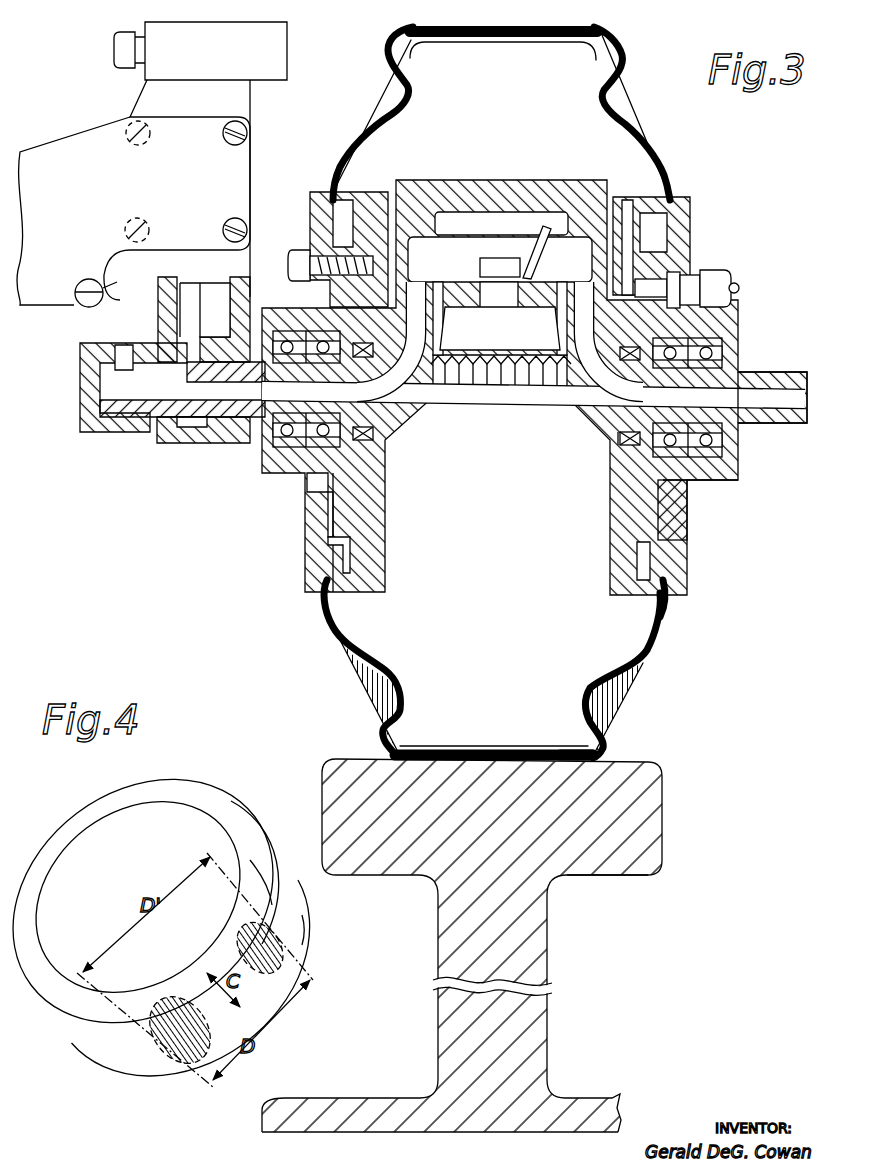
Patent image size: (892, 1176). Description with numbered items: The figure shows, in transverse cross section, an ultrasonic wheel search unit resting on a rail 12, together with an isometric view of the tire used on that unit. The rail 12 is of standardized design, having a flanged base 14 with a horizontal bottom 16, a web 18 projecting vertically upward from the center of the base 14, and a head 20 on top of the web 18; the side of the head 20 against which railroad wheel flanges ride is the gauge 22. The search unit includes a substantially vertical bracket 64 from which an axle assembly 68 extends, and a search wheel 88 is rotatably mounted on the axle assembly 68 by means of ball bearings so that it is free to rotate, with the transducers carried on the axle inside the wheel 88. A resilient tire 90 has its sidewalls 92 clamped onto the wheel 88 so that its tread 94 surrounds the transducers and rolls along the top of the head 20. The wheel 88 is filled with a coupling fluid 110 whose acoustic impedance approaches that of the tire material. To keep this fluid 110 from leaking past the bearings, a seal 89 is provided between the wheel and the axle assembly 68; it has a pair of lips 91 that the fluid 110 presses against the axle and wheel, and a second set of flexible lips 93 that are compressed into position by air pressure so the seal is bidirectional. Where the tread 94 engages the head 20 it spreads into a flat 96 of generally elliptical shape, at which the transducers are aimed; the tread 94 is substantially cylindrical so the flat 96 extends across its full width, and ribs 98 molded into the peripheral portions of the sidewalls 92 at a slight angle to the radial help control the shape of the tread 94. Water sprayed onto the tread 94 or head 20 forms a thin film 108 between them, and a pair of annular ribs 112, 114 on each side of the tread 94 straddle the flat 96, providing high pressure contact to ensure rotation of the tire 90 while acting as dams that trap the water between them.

In FIG. 3, the rail 12 is at (485, 955).
In FIG. 3, the flanged base 14 is at (378, 1101).
In FIG. 3, the horizontal bottom 16 is at (430, 1132).
In FIG. 3, the web 18 is at (527, 1030).
In FIG. 3, the head 20 is at (574, 855).
In FIG. 3, the gauge 22 is at (650, 825).
In FIG. 3, the bracket 64 is at (250, 295).
In FIG. 3, the axle assembly 68 is at (746, 432).
In FIG. 3, the search wheel 88 is at (605, 560).
In FIG. 3, the seal 89 is at (640, 448).
In FIG. 3, the lips 91 is at (620, 444).
In FIG. 3, the sidewalls 92 is at (665, 612).
In FIG. 4, the sidewalls 92 is at (240, 812).
In FIG. 3, the flexible lips 93 is at (652, 445).
In FIG. 3, the tread 94 is at (534, 38).
In FIG. 4, the tread 94 is at (287, 835).
In FIG. 3, the flat 96 is at (532, 750).
In FIG. 4, the flat 96 is at (247, 963).
In FIG. 3, the ribs 98 is at (370, 692).
In FIG. 3, the thin film 108 is at (472, 760).
In FIG. 3, the coupling fluid 110 is at (516, 398).
In FIG. 3, the annular rib 112 is at (600, 26).
In FIG. 4, the annular rib 112 is at (305, 922).
In FIG. 3, the annular rib 114 is at (410, 32).
In FIG. 4, the annular rib 114 is at (272, 895).
In FIG. 4, the resilient tire 90 is at (178, 902).